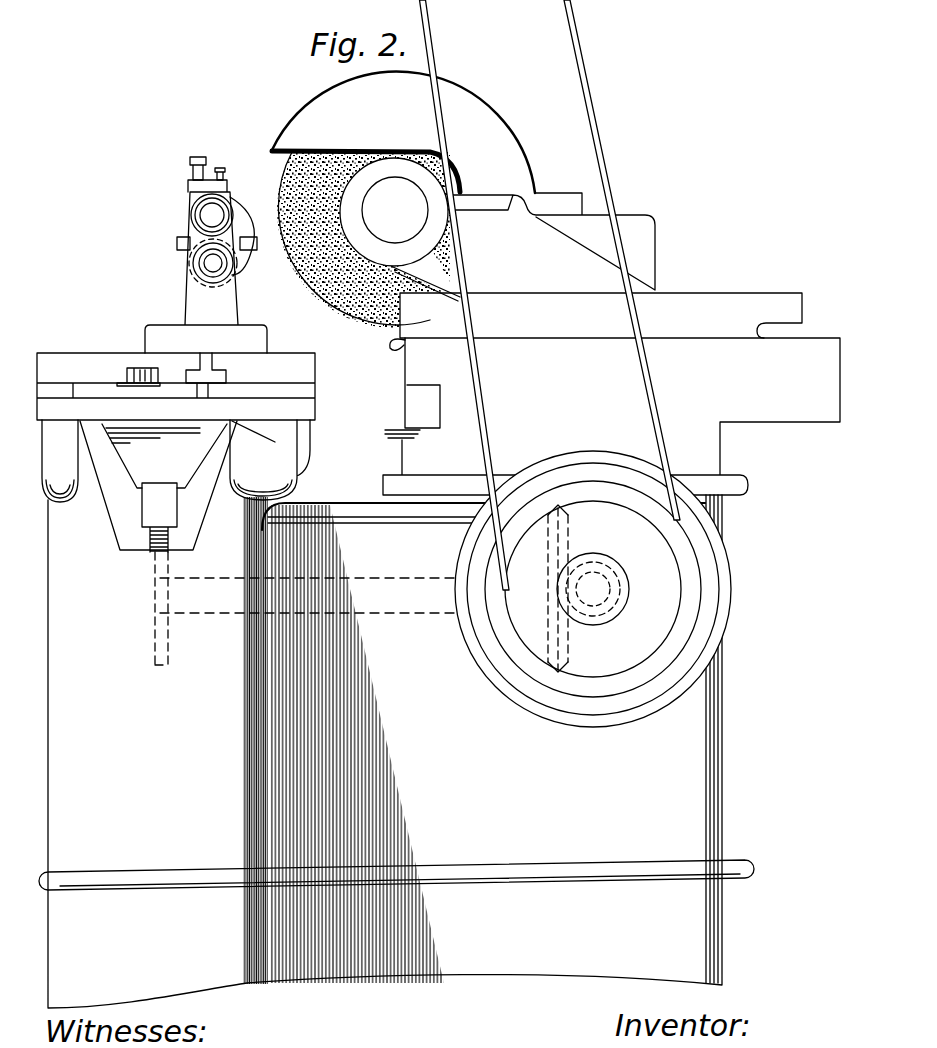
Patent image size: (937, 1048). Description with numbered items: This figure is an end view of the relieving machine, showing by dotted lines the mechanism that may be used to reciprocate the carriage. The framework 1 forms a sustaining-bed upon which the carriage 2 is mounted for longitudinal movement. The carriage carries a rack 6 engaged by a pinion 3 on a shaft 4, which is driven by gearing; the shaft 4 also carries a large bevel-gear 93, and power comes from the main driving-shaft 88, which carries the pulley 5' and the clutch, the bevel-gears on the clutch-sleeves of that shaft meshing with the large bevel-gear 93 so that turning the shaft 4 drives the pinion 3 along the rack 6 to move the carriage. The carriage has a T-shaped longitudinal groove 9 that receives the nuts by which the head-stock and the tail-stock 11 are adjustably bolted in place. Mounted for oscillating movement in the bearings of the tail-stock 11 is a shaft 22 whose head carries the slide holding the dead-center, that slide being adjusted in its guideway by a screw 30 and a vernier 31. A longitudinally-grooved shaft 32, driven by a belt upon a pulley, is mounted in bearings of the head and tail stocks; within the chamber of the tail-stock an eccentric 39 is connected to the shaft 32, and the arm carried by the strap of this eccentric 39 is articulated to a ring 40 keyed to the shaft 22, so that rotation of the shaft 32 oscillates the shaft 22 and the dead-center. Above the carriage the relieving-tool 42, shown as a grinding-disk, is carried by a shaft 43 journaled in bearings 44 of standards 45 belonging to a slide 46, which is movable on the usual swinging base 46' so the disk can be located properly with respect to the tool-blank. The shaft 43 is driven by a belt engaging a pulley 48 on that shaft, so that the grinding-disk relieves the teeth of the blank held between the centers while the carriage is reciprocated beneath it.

The framework 1 is at (385, 751).
The carriage 2 is at (313, 409).
The pinion 3 is at (167, 588).
The shaft 4 is at (402, 578).
The pulley 5' is at (593, 589).
The rack 6 is at (163, 504).
The longitudinal groove 9 is at (206, 378).
The tail-stock 11 is at (206, 266).
The shaft 22 is at (216, 214).
The screw 30 is at (221, 175).
The vernier 31 is at (193, 169).
The longitudinally-grooved shaft 32 is at (213, 266).
The eccentric 39 is at (232, 247).
The ring 40 is at (200, 212).
The relieving-tool 42 is at (373, 328).
The shaft 43 is at (395, 210).
The bearings 44 is at (400, 229).
The standards 45 is at (554, 241).
The slide 46 is at (601, 315).
The swinging base 46' is at (611, 416).
The pulley 48 is at (363, 153).
The main driving-shaft 88 is at (593, 589).
The large bevel-gear 93 is at (572, 652).